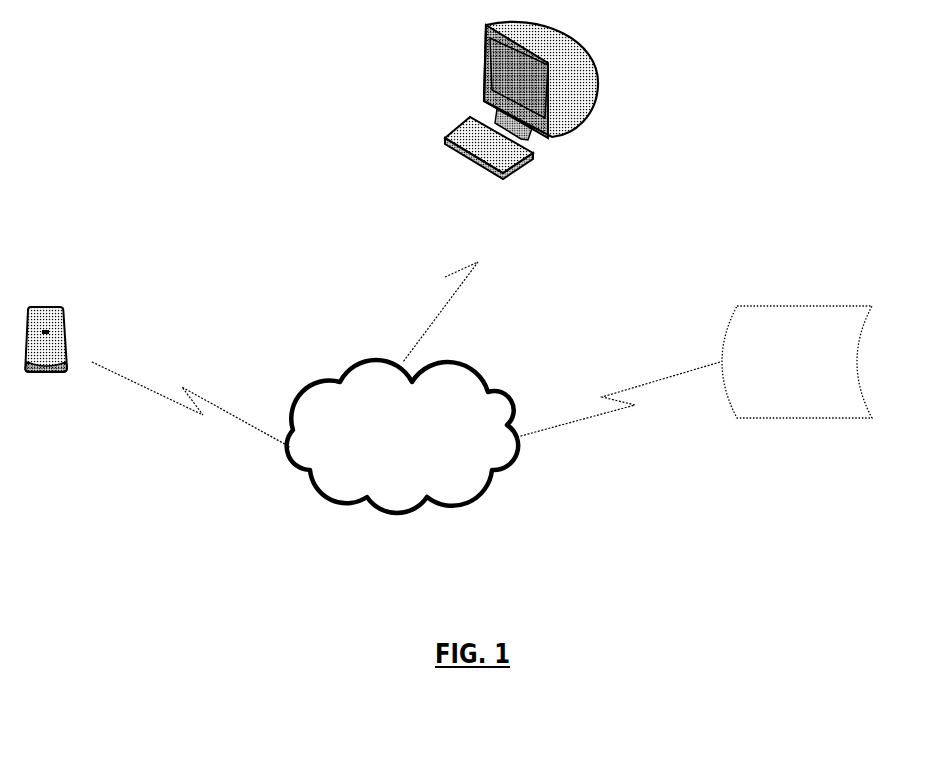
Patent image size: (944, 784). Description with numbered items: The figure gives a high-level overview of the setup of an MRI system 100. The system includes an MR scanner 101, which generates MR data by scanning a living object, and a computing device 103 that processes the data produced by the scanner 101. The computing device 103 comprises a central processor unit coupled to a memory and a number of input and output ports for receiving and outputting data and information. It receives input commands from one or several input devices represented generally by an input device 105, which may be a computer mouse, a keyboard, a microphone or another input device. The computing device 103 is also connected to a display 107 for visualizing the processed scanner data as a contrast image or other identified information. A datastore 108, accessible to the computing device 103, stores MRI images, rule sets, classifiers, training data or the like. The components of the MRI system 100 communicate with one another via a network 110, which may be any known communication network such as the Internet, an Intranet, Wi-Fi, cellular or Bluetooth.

The MRI system 100 is at (232, 166).
The MR scanner 101 is at (46, 354).
The computing device 103 is at (445, 277).
The input device 105 is at (477, 145).
The display 107 is at (492, 63).
The datastore 108 is at (797, 362).
The network 110 is at (403, 436).